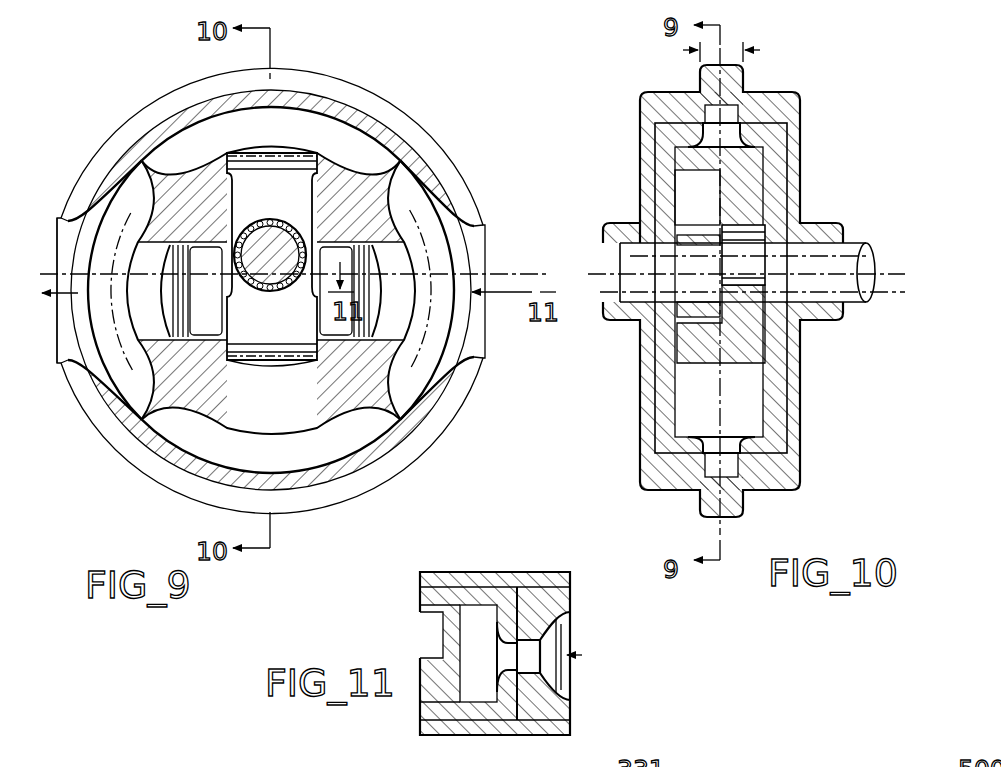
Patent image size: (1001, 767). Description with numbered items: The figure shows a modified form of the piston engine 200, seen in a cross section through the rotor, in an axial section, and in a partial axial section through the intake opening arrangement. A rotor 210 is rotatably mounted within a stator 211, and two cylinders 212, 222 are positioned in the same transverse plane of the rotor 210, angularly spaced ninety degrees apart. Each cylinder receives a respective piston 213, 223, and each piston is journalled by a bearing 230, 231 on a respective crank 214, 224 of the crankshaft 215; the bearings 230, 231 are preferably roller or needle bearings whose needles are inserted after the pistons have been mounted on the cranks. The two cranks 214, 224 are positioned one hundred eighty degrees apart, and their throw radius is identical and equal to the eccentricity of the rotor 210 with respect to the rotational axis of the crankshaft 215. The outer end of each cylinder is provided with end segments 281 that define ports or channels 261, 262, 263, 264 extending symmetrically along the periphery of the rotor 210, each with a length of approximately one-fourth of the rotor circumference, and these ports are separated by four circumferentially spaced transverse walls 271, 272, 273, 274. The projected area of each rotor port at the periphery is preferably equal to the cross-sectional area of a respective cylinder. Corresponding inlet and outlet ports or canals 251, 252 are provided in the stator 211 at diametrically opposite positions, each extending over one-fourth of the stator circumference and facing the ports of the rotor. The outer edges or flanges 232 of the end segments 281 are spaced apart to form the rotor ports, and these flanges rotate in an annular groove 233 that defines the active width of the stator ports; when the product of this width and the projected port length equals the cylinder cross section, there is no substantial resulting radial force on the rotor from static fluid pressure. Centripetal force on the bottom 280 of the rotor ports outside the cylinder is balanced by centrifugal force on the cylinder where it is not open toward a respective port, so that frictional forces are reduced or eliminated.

In FIG. 9, the piston engine 200 is at (130, 86).
In FIG. 10, the piston engine 200 is at (836, 62).
In FIG. 9, the rotor 210 is at (386, 202).
In FIG. 10, the rotor 210 is at (778, 158).
In FIG. 11, the rotor 210 is at (498, 607).
In FIG. 9, the stator 211 is at (372, 100).
In FIG. 10, the stator 211 is at (790, 93).
In FIG. 11, the stator 211 is at (563, 594).
In FIG. 9, the cylinder 212 is at (226, 426).
In FIG. 9, the piston 213 is at (300, 150).
In FIG. 10, the piston 213 is at (707, 173).
In FIG. 9, the crank 214 is at (262, 285).
In FIG. 10, the crank 214 is at (746, 255).
In FIG. 10, the crankshaft 215 is at (840, 243).
In FIG. 9, the cylinder 222 is at (140, 315).
In FIG. 9, the piston 223 is at (375, 303).
In FIG. 10, the piston 223 is at (688, 342).
In FIG. 11, the piston 223 is at (443, 628).
In FIG. 10, the crank 224 is at (680, 308).
In FIG. 10, the bearing 230 is at (765, 307).
In FIG. 9, the bearing 231 is at (283, 222).
In FIG. 10, the bearing 231 is at (672, 238).
In FIG. 11, the flange 232 is at (533, 673).
In FIG. 11, the annular groove 233 is at (550, 632).
In FIG. 9, the inlet port 251 is at (447, 212).
In FIG. 11, the inlet port 251 is at (560, 683).
In FIG. 9, the outlet port 252 is at (102, 163).
In FIG. 9, the port 261 is at (220, 143).
In FIG. 10, the port 261 is at (725, 128).
In FIG. 9, the port 262 is at (442, 264).
In FIG. 11, the port 262 is at (523, 655).
In FIG. 9, the port 263 is at (240, 444).
In FIG. 10, the port 263 is at (738, 490).
In FIG. 9, the port 264 is at (146, 352).
In FIG. 9, the transverse wall 271 is at (402, 168).
In FIG. 9, the transverse wall 272 is at (443, 413).
In FIG. 9, the transverse wall 273 is at (140, 410).
In FIG. 9, the transverse wall 274 is at (128, 160).
In FIG. 9, the bottom of rotor ports 280 is at (220, 150).
In FIG. 10, the end segment 281 is at (657, 110).
In FIG. 11, the end segment 281 is at (497, 688).